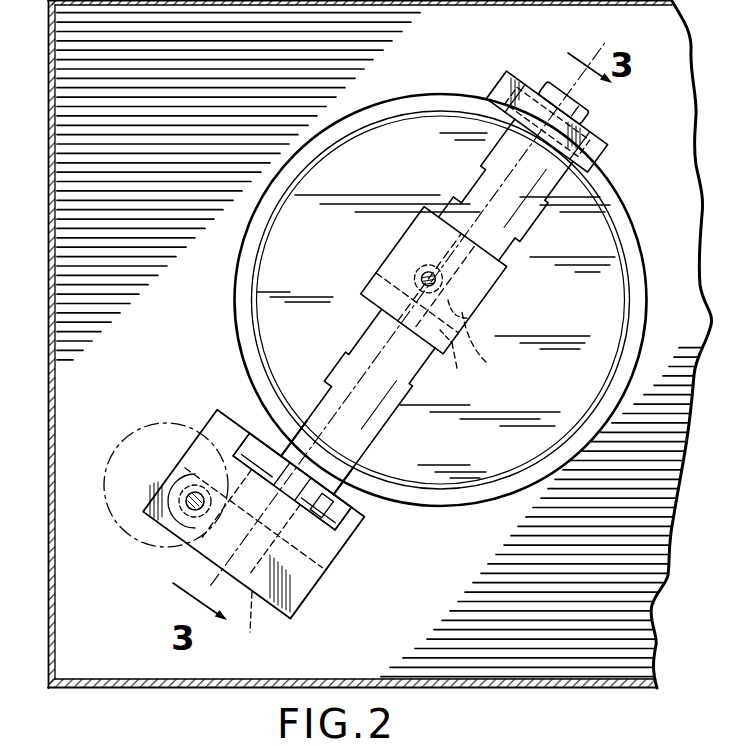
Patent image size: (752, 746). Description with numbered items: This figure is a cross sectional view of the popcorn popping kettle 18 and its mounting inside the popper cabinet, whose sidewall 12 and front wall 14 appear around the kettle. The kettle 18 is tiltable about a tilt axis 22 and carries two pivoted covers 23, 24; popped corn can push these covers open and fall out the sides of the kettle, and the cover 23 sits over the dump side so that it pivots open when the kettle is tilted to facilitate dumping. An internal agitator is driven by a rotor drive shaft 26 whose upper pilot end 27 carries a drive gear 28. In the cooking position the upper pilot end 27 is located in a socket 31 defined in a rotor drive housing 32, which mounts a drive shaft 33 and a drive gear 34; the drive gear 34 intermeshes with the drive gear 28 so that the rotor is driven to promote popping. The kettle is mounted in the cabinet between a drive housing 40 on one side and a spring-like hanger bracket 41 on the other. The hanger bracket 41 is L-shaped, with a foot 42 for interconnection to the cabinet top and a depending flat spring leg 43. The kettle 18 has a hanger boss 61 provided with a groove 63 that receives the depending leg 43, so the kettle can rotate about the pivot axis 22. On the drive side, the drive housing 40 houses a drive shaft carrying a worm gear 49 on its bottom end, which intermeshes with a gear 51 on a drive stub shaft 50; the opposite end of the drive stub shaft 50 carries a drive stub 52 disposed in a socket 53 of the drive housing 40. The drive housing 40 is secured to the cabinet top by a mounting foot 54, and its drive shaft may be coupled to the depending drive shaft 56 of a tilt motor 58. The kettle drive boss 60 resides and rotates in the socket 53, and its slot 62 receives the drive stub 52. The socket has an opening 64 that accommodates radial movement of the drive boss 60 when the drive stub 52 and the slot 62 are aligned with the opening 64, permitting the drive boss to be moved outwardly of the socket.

The sidewall 12 is at (47, 343).
The front wall 14 is at (559, 689).
The popping kettle 18 is at (368, 104).
The tilt axis 22 is at (376, 314).
The cover 23 is at (576, 389).
The cover 24 is at (324, 254).
The rotor drive shaft 26 is at (465, 308).
The upper pilot end 27 is at (496, 287).
The drive gear 28 is at (475, 344).
The socket 31 is at (449, 360).
The rotor drive housing 32 is at (420, 226).
The drive shaft 33 is at (420, 270).
The drive gear 34 is at (412, 277).
The drive housing 40 is at (322, 599).
The spring-like hanger bracket 41 is at (507, 70).
The foot 42 is at (602, 154).
The flat spring leg 43 is at (604, 136).
The worm gear 49 is at (182, 595).
The drive stub shaft 50 is at (255, 624).
The gear 51 is at (334, 560).
The drive stub 52 is at (277, 478).
The socket 53 is at (338, 538).
The mounting foot 54 is at (160, 532).
The depending drive shaft 56 is at (186, 496).
The tilt motor 58 is at (131, 428).
The drive boss 60 is at (324, 514).
The hanger boss 61 is at (594, 110).
The slot 62 is at (313, 438).
The groove 63 is at (553, 86).
The opening 64 is at (383, 476).